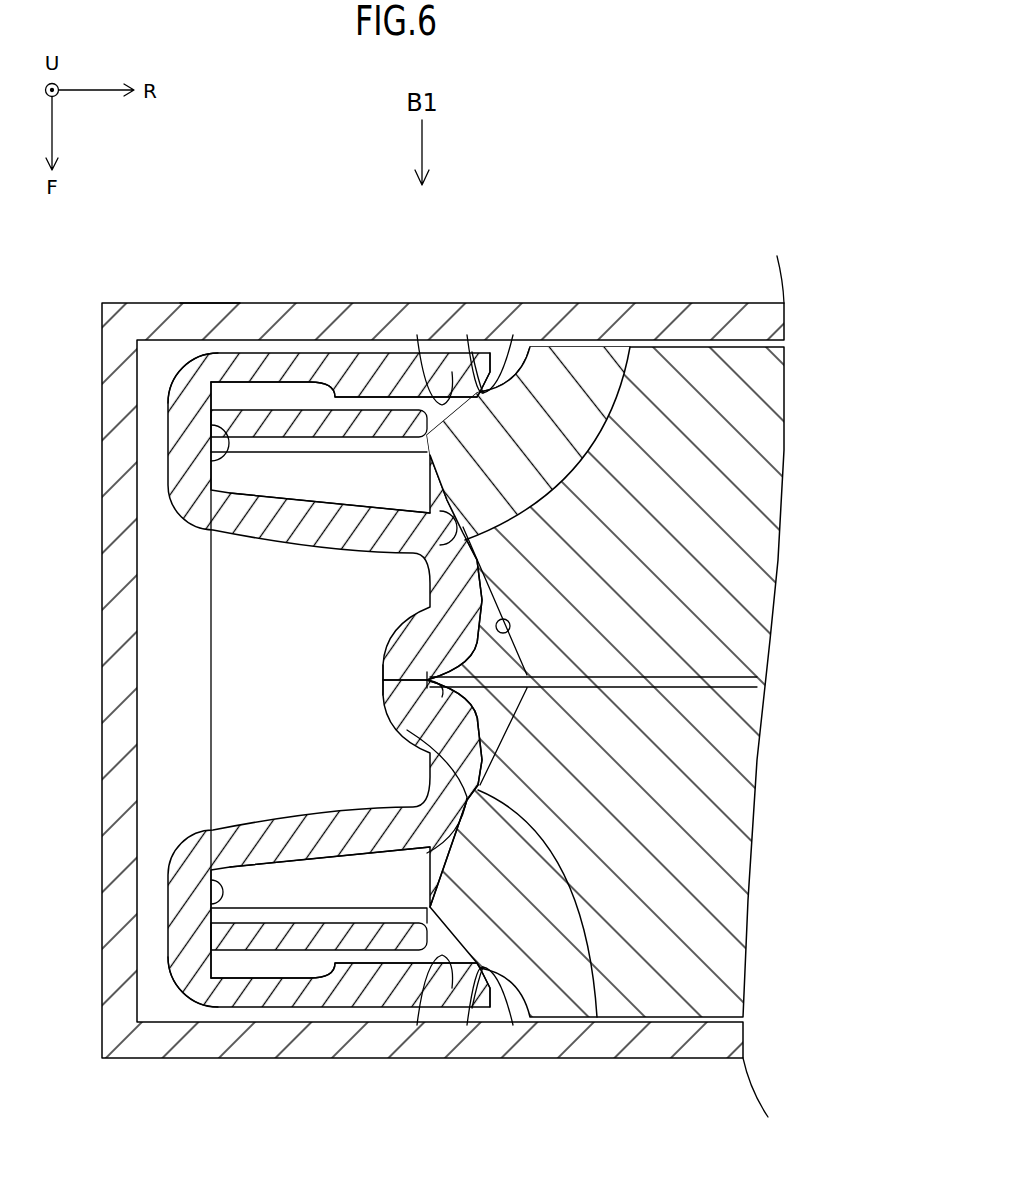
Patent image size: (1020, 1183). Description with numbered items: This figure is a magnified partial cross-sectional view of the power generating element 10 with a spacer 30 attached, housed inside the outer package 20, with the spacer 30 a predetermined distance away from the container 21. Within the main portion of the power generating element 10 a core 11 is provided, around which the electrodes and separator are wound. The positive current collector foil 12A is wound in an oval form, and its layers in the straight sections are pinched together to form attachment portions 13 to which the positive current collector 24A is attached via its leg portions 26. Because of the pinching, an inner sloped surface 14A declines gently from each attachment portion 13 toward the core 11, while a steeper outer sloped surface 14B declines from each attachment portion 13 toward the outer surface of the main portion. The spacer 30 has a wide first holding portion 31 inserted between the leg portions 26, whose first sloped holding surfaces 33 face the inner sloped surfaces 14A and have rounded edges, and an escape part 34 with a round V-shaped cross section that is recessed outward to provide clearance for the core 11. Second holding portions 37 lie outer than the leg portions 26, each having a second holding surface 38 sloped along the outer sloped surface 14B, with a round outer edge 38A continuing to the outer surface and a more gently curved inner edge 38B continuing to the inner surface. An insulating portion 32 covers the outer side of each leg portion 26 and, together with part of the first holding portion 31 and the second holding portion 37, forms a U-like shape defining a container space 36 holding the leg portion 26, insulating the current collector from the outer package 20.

The power generating element 10 is at (697, 365).
The core 11 is at (687, 682).
The positive current collector foil 12A is at (483, 395).
The attachment portion 13 is at (270, 410).
The inner sloped surface 14A is at (527, 692).
The outer sloped surface 14B is at (467, 335).
The outer package 20 is at (160, 317).
The container 21 is at (207, 310).
The positive current collector 24A is at (288, 417).
The leg portion 26 is at (328, 408).
The spacer 30 is at (232, 524).
The first holding portion 31 is at (320, 527).
The insulating portion 32 is at (182, 410).
The first sloped holding surface 33 is at (630, 347).
The escape part 34 is at (400, 723).
The container space 36 is at (200, 463).
The second holding portion 37 is at (384, 372).
The second holding surface 38 is at (522, 412).
The outer edge 38A is at (472, 352).
The inner edge 38B is at (417, 335).